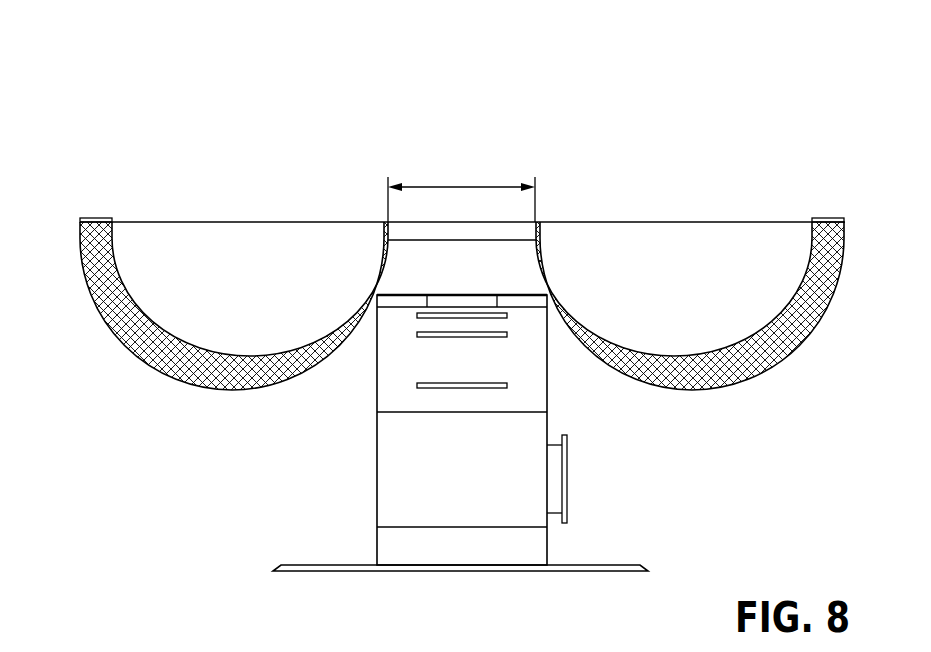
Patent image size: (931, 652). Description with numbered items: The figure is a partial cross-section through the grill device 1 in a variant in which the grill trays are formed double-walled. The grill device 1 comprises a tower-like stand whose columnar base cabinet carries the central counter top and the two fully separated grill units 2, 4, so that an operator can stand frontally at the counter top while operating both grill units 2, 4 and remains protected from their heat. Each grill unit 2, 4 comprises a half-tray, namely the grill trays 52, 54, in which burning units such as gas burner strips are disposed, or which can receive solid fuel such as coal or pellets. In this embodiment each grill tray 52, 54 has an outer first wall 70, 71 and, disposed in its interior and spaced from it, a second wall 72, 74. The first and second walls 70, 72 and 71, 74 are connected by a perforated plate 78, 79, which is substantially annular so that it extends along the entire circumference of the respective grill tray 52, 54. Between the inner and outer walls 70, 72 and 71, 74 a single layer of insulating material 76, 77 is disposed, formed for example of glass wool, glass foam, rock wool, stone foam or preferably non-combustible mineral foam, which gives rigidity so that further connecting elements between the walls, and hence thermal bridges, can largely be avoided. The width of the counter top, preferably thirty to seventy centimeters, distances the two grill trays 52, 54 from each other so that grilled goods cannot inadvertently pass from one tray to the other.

The grill device 1 is at (296, 128).
The grill unit 2 is at (193, 194).
The grill unit 4 is at (711, 193).
The grill tray 52 is at (137, 380).
The grill tray 54 is at (751, 388).
The first wall 70 is at (110, 320).
The first wall 71 is at (805, 335).
The second wall 72 is at (158, 310).
The second wall 74 is at (615, 343).
The insulating material 76 is at (185, 365).
The insulating material 77 is at (685, 373).
The perforated plate 78 is at (100, 218).
The perforated plate 79 is at (830, 218).